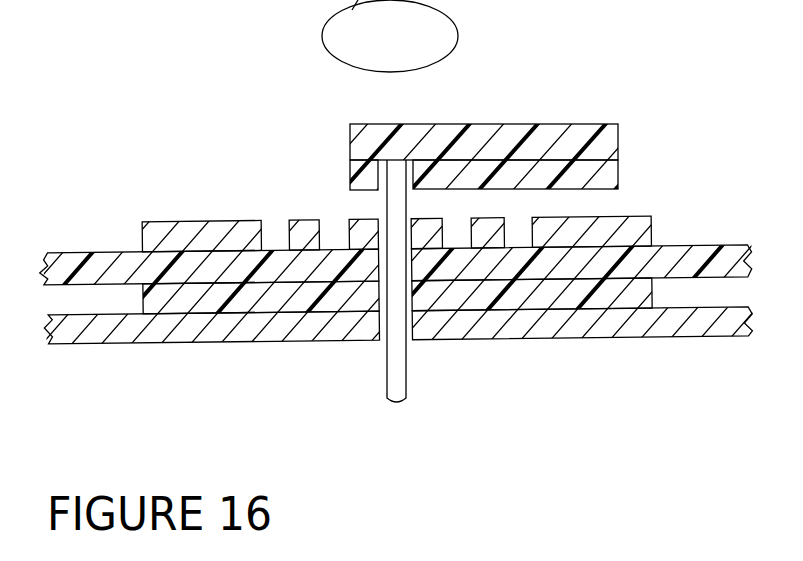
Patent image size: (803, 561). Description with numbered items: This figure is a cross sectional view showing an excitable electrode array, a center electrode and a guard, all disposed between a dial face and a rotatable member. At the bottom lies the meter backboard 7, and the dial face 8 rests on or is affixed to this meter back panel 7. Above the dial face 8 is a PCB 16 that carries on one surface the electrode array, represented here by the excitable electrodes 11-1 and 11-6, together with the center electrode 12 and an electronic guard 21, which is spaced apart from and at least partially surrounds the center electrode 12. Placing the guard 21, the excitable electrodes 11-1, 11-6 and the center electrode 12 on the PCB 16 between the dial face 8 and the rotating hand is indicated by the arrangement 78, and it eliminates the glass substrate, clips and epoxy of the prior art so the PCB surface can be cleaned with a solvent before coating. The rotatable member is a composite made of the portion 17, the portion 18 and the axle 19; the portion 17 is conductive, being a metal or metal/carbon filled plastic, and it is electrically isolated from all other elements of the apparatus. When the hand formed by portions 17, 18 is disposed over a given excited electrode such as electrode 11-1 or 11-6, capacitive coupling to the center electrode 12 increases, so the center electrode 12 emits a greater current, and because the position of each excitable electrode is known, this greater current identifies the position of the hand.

The meter backboard 7 is at (191, 344).
The dial face 8 is at (155, 302).
The excitable electrode 11-1 is at (160, 222).
The excitable electrode 11-6 is at (653, 228).
The center electrode 12 is at (363, 222).
The PCB 16 is at (96, 251).
The conductive portion of rotatable member 17 is at (358, 183).
The rotatable member portion 18 is at (483, 146).
The axle 19 is at (406, 385).
The guard 21 is at (304, 222).
The electrode array arrangement 78 is at (649, 89).